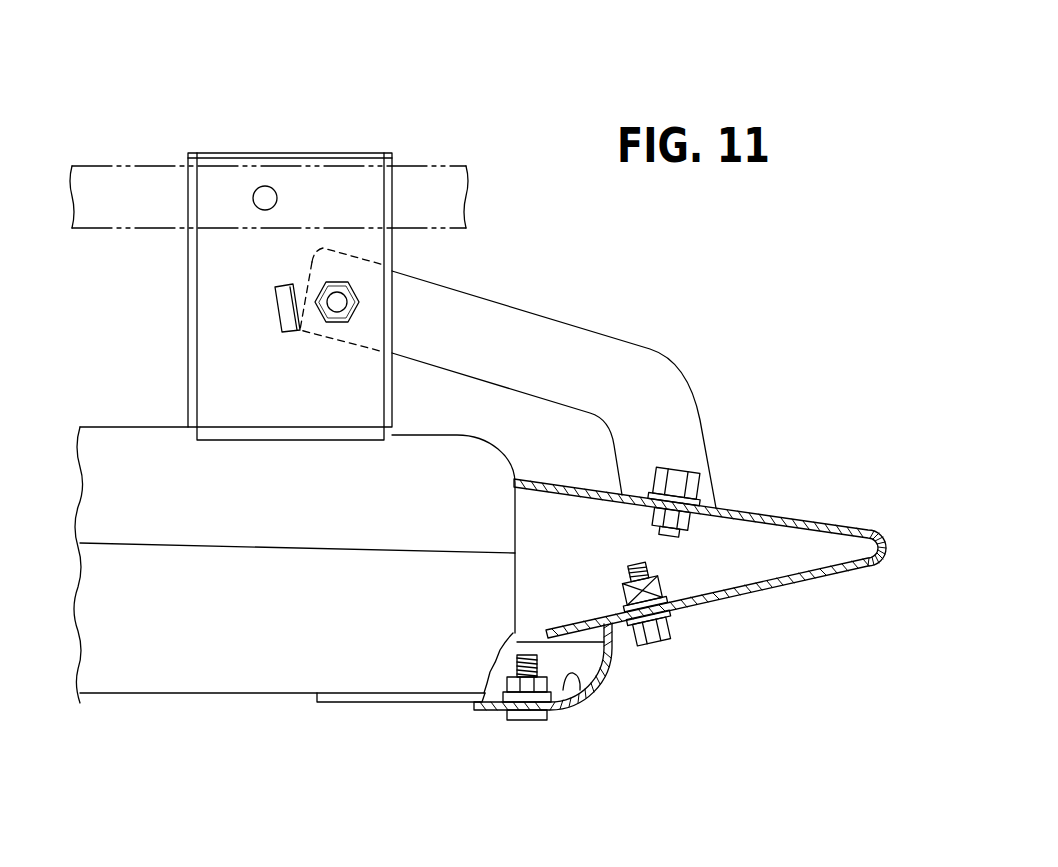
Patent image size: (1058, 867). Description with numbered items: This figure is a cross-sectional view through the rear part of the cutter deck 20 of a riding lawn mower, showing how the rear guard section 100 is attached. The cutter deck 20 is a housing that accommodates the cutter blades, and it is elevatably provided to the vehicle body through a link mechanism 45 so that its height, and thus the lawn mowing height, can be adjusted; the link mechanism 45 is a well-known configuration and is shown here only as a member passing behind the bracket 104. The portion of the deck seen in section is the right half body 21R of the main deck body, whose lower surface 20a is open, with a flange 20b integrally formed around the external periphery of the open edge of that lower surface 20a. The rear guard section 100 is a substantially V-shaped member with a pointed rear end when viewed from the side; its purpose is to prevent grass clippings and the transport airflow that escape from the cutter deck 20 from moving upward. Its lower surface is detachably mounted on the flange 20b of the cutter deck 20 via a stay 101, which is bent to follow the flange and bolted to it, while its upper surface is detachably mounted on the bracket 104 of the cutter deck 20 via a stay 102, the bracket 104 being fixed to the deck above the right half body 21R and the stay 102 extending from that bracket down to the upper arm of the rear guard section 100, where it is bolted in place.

The cutter deck 20 is at (332, 422).
The right half body 21R is at (123, 425).
The lower surface 20a is at (243, 697).
The flange 20b is at (544, 730).
The link mechanism 45 is at (443, 167).
The rear guard section 100 is at (714, 537).
The stay 101 is at (605, 680).
The stay 102 is at (597, 345).
The bracket 104 is at (290, 252).